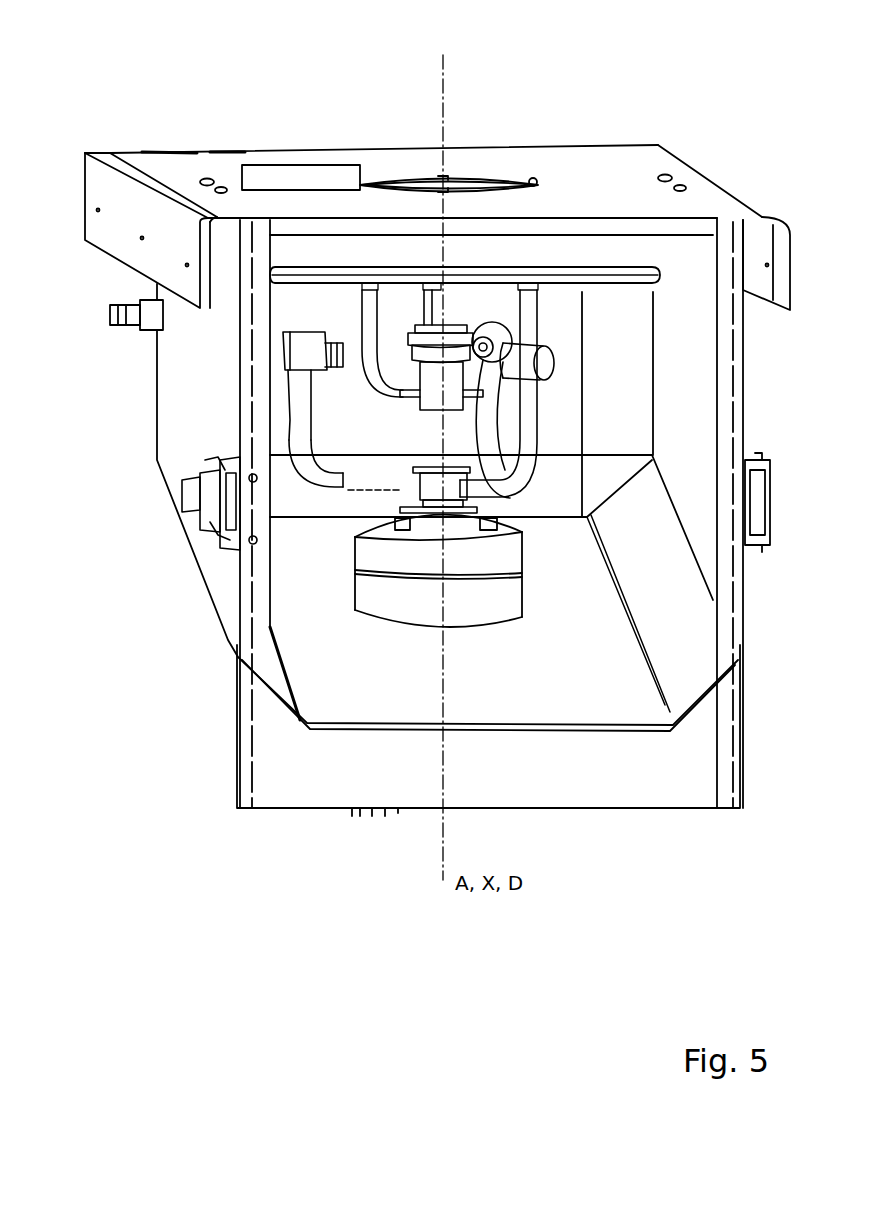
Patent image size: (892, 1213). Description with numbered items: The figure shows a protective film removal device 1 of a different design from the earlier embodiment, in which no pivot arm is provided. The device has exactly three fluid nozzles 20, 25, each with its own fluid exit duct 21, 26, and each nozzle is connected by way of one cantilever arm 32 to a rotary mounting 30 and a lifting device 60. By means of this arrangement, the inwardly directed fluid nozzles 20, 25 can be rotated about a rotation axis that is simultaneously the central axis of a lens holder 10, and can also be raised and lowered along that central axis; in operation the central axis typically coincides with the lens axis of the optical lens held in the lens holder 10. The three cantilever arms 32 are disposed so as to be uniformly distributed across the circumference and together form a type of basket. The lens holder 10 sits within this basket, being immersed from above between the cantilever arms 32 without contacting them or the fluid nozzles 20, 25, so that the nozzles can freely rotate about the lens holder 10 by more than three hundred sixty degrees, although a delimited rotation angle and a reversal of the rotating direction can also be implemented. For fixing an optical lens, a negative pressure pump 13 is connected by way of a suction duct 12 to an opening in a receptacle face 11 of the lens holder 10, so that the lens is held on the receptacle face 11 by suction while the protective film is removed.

The protective film removal device 1 is at (134, 70).
The lens holder 10 is at (190, 508).
The receptacle face 11 is at (434, 328).
The suction duct 12 is at (370, 283).
The negative pressure pump 13 is at (323, 267).
The fluid nozzle 20 is at (297, 355).
The fluid exit duct 21 is at (405, 360).
The fluid nozzle 25 is at (547, 355).
The fluid exit duct 26 is at (547, 378).
The rotary mounting 30 is at (430, 527).
The cantilever arm 32 is at (320, 483).
The lifting device 60 is at (438, 490).